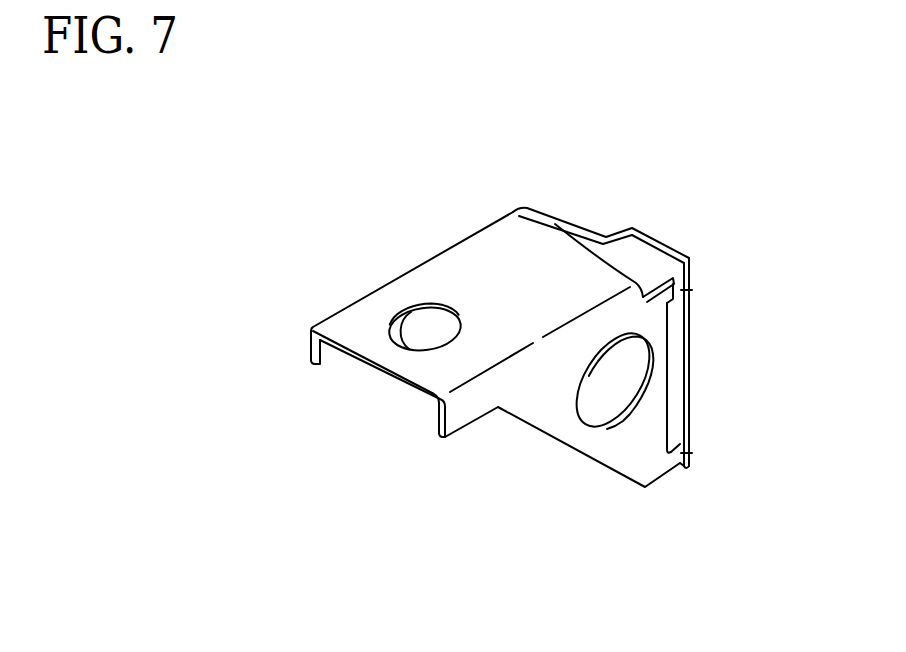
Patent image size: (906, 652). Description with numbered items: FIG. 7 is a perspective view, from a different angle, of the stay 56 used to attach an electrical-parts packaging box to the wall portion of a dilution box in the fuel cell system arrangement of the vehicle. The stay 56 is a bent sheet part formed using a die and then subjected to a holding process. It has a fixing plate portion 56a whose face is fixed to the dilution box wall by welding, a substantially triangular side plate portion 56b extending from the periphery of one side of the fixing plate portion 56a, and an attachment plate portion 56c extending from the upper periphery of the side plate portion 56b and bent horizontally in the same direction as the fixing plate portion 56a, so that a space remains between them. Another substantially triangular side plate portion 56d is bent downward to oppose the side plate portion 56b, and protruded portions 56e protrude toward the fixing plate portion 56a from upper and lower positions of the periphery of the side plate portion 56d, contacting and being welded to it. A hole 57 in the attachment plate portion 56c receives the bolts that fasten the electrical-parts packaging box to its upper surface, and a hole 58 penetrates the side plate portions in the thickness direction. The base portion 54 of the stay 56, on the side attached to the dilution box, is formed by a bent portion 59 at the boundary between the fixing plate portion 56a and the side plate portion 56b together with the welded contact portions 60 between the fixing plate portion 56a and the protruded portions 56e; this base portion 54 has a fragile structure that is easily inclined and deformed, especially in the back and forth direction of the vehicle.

The base portion 54 is at (677, 477).
The stay 56 is at (326, 201).
The fixing plate portion 56a is at (652, 237).
The side plate portion 56b is at (328, 352).
The attachment plate portion 56c is at (445, 272).
The side plate portion 56d is at (541, 393).
The protruded portions 56e is at (682, 291).
The hole 57 is at (407, 323).
The hole 58 is at (581, 378).
The bent portion 59 is at (550, 225).
The contact portions 60 is at (690, 292).